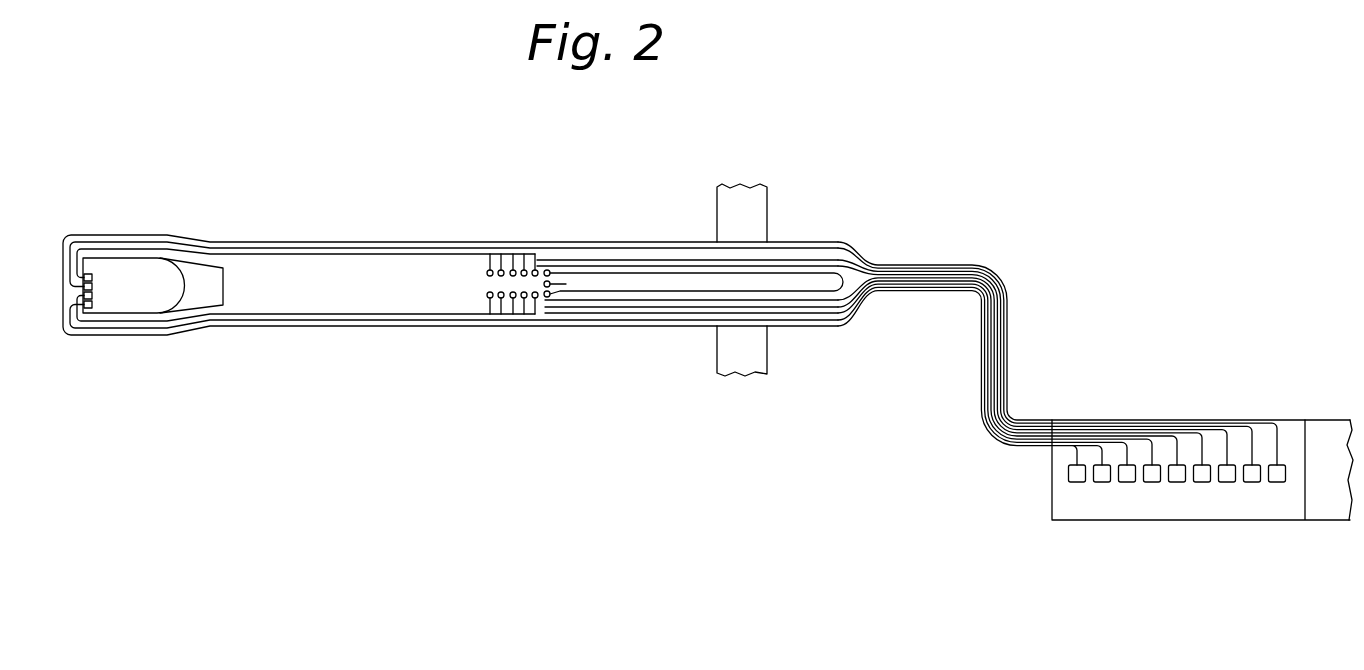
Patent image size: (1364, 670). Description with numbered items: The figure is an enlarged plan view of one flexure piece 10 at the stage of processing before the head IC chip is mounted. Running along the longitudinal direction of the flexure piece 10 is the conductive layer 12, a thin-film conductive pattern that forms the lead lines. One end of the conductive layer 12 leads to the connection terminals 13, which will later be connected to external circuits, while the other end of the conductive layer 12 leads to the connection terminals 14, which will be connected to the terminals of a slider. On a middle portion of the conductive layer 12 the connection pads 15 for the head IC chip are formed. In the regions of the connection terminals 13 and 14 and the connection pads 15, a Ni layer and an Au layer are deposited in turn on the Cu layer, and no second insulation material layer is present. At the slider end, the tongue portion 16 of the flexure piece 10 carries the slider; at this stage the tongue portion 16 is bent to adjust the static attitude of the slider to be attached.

The flexure piece 10 is at (803, 280).
The conductive layer 12 is at (437, 252).
The connection terminals 13 is at (1077, 482).
The connection terminals 14 is at (90, 284).
The connection pads 15 is at (520, 270).
The tongue portion 16 is at (148, 268).